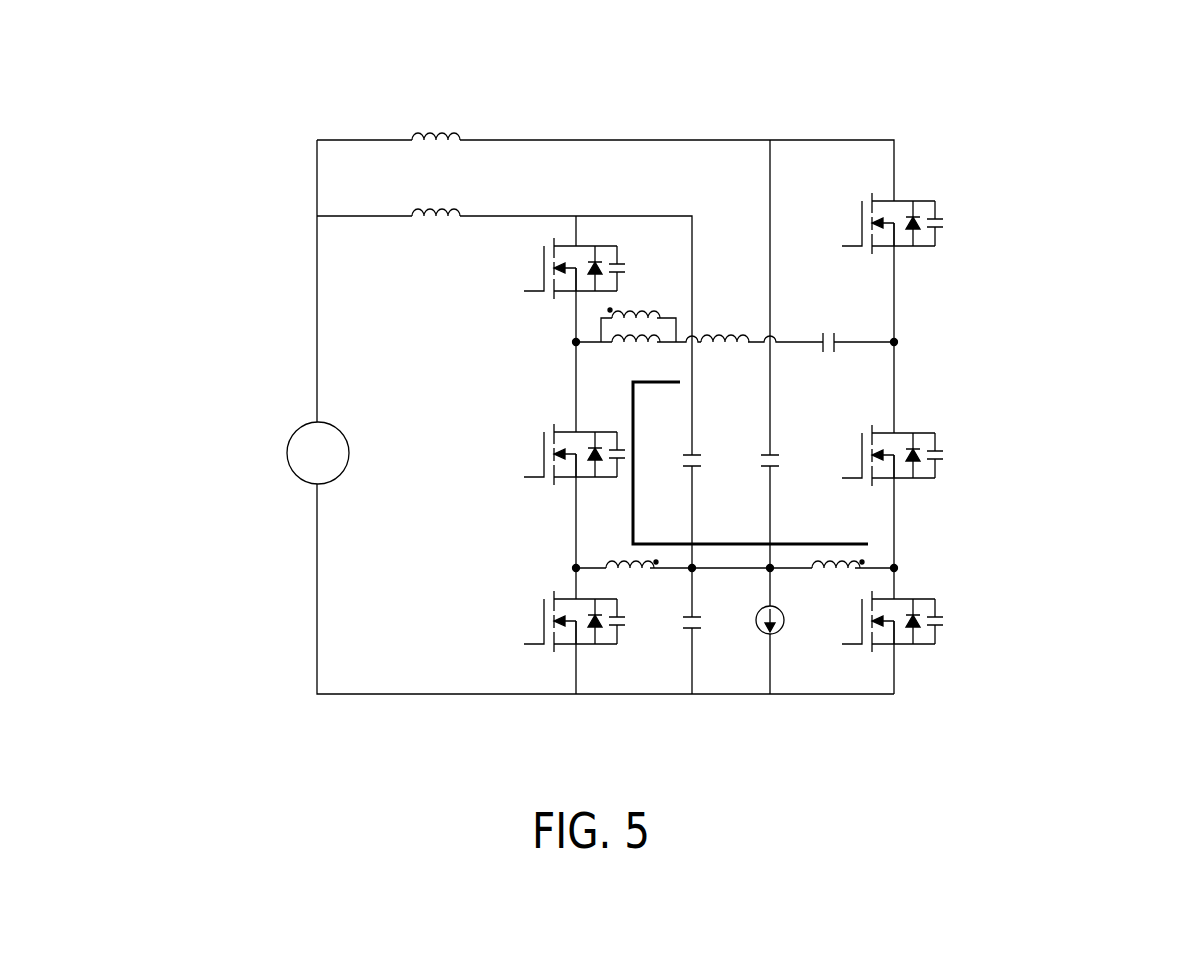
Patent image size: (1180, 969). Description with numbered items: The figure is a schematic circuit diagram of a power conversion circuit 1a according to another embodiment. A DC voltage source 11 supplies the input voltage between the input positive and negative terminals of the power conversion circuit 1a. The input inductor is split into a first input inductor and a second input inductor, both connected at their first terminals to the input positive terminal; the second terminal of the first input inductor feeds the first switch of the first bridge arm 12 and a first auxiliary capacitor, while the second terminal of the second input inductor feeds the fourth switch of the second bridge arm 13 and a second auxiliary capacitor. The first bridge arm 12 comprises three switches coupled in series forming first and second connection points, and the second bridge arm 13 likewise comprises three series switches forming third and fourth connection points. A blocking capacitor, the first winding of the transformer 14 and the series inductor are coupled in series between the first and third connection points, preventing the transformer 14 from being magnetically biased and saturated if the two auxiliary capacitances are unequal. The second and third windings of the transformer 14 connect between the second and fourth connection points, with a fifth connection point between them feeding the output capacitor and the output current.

The power conversion circuit 1a is at (1150, 138).
The DC voltage source 11 is at (268, 407).
The first bridge arm 12 is at (501, 358).
The second bridge arm 13 is at (930, 138).
The transformer 14 is at (659, 400).